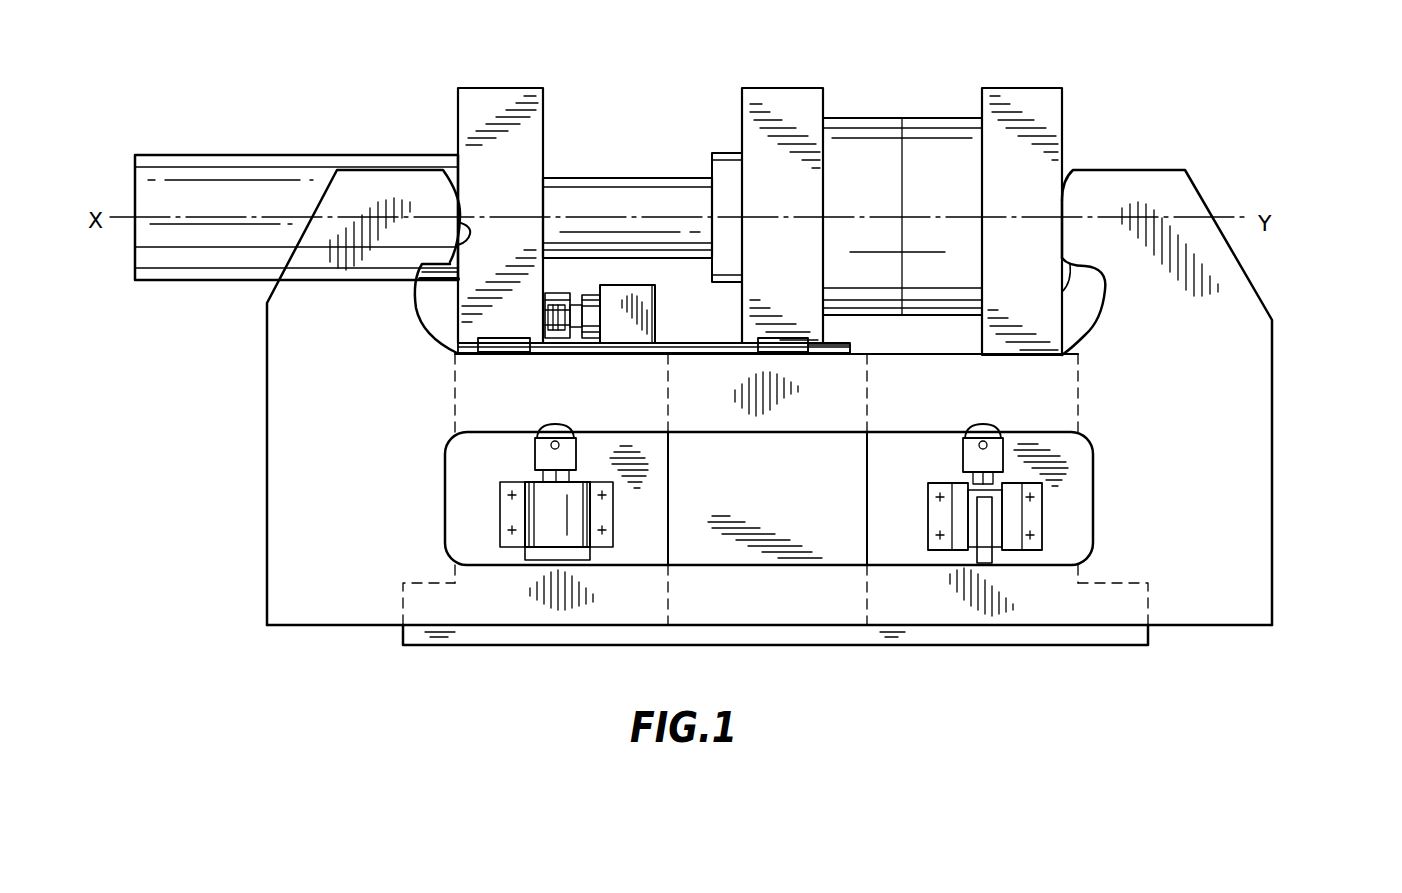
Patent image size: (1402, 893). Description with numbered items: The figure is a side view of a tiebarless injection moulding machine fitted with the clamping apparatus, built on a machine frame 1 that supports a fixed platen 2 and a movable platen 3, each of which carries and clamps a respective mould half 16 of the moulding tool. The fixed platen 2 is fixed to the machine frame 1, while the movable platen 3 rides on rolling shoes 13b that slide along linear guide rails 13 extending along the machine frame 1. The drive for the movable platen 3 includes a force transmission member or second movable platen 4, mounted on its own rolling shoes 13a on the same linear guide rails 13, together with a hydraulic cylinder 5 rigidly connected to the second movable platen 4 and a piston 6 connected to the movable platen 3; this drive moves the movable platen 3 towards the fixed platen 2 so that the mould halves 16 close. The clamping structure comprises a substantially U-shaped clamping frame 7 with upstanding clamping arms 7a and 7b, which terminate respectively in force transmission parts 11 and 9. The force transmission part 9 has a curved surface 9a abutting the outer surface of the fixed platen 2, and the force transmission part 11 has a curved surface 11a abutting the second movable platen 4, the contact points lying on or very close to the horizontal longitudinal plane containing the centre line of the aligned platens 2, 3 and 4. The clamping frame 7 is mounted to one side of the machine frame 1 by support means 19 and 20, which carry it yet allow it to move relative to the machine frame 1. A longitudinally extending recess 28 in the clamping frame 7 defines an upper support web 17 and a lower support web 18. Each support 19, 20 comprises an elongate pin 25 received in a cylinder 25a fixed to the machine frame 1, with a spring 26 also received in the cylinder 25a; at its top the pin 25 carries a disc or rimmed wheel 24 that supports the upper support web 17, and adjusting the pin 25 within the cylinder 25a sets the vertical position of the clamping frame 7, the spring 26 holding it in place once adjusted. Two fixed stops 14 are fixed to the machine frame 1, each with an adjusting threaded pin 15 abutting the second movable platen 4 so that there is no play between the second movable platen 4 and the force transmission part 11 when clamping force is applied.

The machine frame 1 is at (1117, 638).
The fixed platen 2 is at (1050, 105).
The movable platen 3 is at (800, 105).
The second movable platen 4 is at (530, 103).
The hydraulic cylinder 5 is at (287, 178).
The piston 6 is at (662, 205).
The clamping frame 7 is at (263, 436).
The clamping arm 7a is at (292, 406).
The clamping arm 7b is at (1248, 438).
The force transmission part 9 is at (1100, 212).
The curved surface 9a is at (1090, 300).
The force transmission part 11 is at (461, 214).
The curved surface 11a is at (458, 243).
The linear guide rails 13 is at (705, 340).
The rolling shoes 13a is at (500, 350).
The rolling shoes 13b is at (800, 352).
The fixed stop 14 is at (622, 300).
The adjusting threaded pin 15 is at (560, 342).
The mould halves 16 is at (928, 138).
The upper support web 17 is at (812, 405).
The lower support web 18 is at (833, 597).
The support means 19 is at (580, 521).
The support means 20 is at (960, 522).
The rimmed wheel 24 is at (985, 435).
The pin 25 is at (980, 465).
The cylinder 25a is at (1005, 535).
The spring 26 is at (1010, 525).
The longitudinally extending recess 28 is at (720, 440).